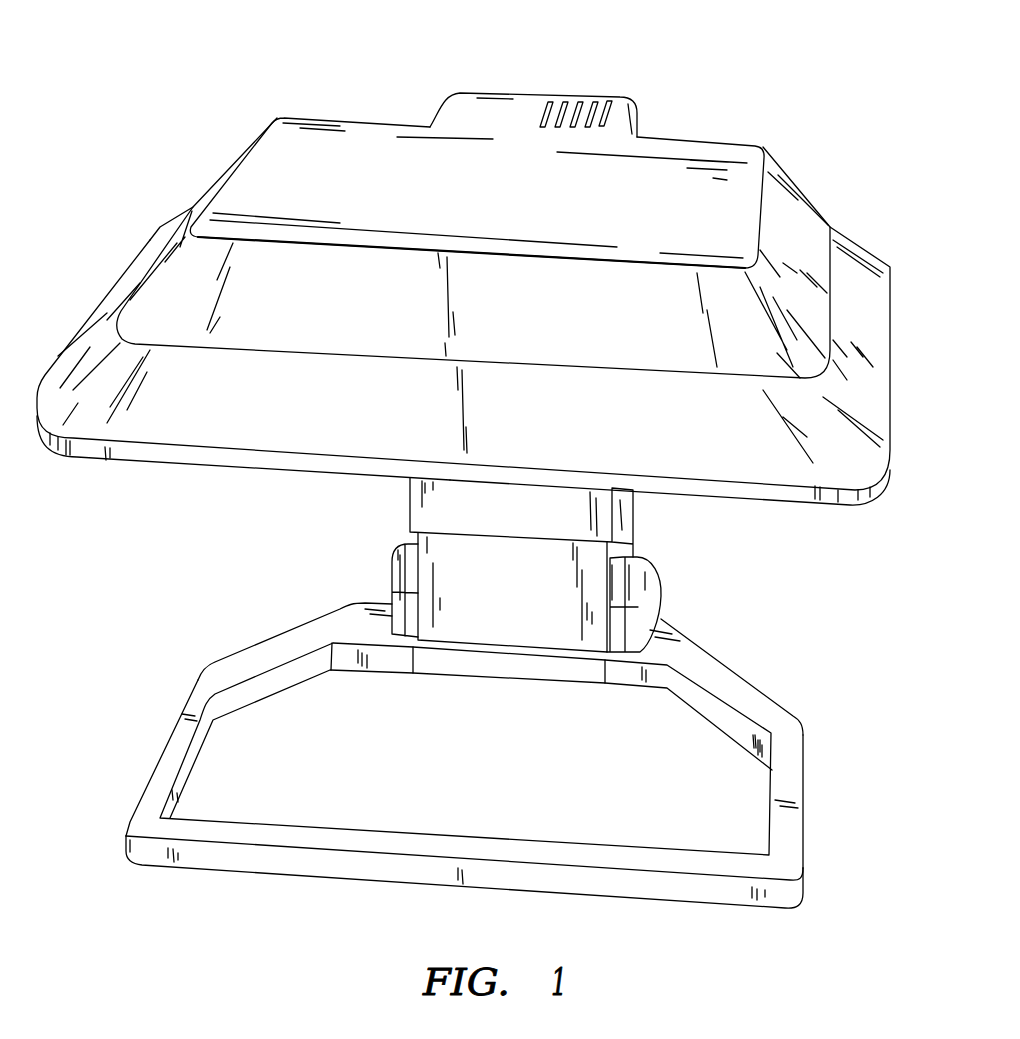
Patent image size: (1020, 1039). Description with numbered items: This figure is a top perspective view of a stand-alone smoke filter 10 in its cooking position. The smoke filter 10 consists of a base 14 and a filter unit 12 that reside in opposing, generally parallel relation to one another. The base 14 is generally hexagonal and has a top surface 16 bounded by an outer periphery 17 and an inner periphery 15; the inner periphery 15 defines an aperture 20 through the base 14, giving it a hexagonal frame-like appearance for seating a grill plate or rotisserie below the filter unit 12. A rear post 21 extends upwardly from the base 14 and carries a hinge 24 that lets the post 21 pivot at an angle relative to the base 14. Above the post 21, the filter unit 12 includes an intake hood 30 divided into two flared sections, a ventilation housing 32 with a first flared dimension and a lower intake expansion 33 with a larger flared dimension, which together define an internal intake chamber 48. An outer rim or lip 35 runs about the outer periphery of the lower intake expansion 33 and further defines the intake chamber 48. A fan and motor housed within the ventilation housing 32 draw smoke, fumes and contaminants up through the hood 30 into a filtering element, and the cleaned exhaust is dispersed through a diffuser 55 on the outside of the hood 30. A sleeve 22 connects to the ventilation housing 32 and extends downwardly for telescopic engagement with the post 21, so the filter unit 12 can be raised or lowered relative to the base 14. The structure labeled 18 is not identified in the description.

The smoke filter 10 is at (132, 90).
The filter unit 12 is at (680, 133).
The base 14 is at (776, 693).
The inner periphery 15 is at (263, 690).
The top surface 16 is at (782, 853).
The outer periphery 17 is at (157, 757).
The vent housing 18 is at (522, 96).
The aperture 20 is at (488, 784).
The rear post 21 is at (549, 619).
The sleeve 22 is at (548, 527).
The hinge 24 is at (393, 571).
The intake hood 30 is at (352, 148).
The ventilation housing 32 is at (578, 330).
The lower intake expansion 33 is at (578, 432).
The outer rim or lip 35 is at (818, 498).
The internal intake chamber 48 is at (170, 472).
The diffuser 55 is at (613, 100).